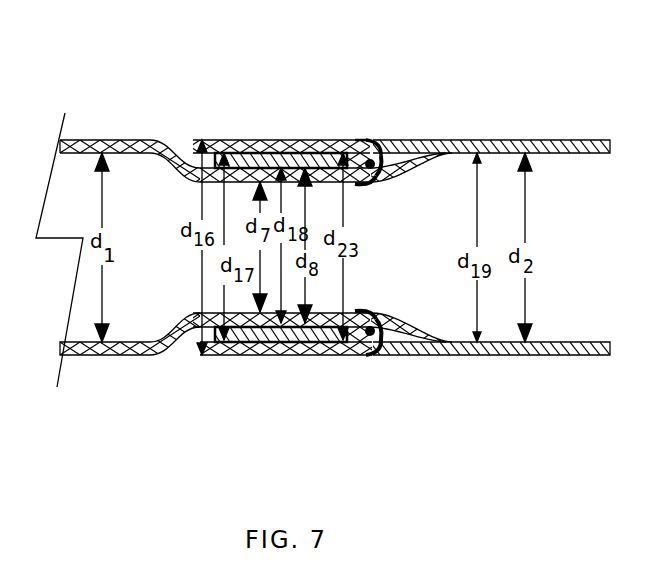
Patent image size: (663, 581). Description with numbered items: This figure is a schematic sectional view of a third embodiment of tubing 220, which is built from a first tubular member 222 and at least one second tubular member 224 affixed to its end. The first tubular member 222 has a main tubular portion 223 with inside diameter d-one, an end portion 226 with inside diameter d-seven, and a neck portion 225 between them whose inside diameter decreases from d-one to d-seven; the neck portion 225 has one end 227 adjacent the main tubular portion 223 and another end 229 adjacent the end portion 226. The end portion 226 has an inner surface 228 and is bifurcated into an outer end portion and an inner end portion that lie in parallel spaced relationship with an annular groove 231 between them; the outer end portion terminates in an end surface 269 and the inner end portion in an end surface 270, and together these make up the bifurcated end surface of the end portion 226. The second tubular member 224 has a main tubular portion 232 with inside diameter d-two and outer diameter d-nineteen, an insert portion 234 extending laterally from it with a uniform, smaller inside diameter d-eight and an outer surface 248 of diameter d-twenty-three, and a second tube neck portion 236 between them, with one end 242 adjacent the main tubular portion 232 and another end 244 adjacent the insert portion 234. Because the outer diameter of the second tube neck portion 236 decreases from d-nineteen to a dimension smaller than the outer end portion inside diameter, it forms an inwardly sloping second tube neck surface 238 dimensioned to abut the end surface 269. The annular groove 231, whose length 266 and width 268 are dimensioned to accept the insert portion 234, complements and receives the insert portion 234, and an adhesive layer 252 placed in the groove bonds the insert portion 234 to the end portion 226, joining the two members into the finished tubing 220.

The tubing 220 is at (463, 83).
The first tubular member 222 is at (170, 140).
The main tubular portion 223 is at (77, 140).
The second tubular member 224 is at (525, 140).
The neck portion 225 is at (172, 168).
The end portion 226 is at (260, 140).
The one end of neck portion 227 is at (170, 343).
The inner surface 228 is at (360, 185).
The another end of neck portion 229 is at (192, 315).
The annular groove 231 is at (305, 140).
The main tubular portion 232 is at (563, 356).
The insert portion 234 is at (223, 355).
The second tube neck portion 236 is at (387, 355).
The inwardly sloping second tube neck surface 238 is at (440, 142).
The one end of second tube neck portion 242 is at (395, 342).
The another end of second tube neck portion 244 is at (358, 355).
The outer surface 248 is at (270, 355).
The adhesive layer 252 is at (370, 140).
The length 266 is at (313, 355).
The width 268 is at (207, 354).
The end surface 269 is at (360, 140).
The end surface 270 is at (370, 181).